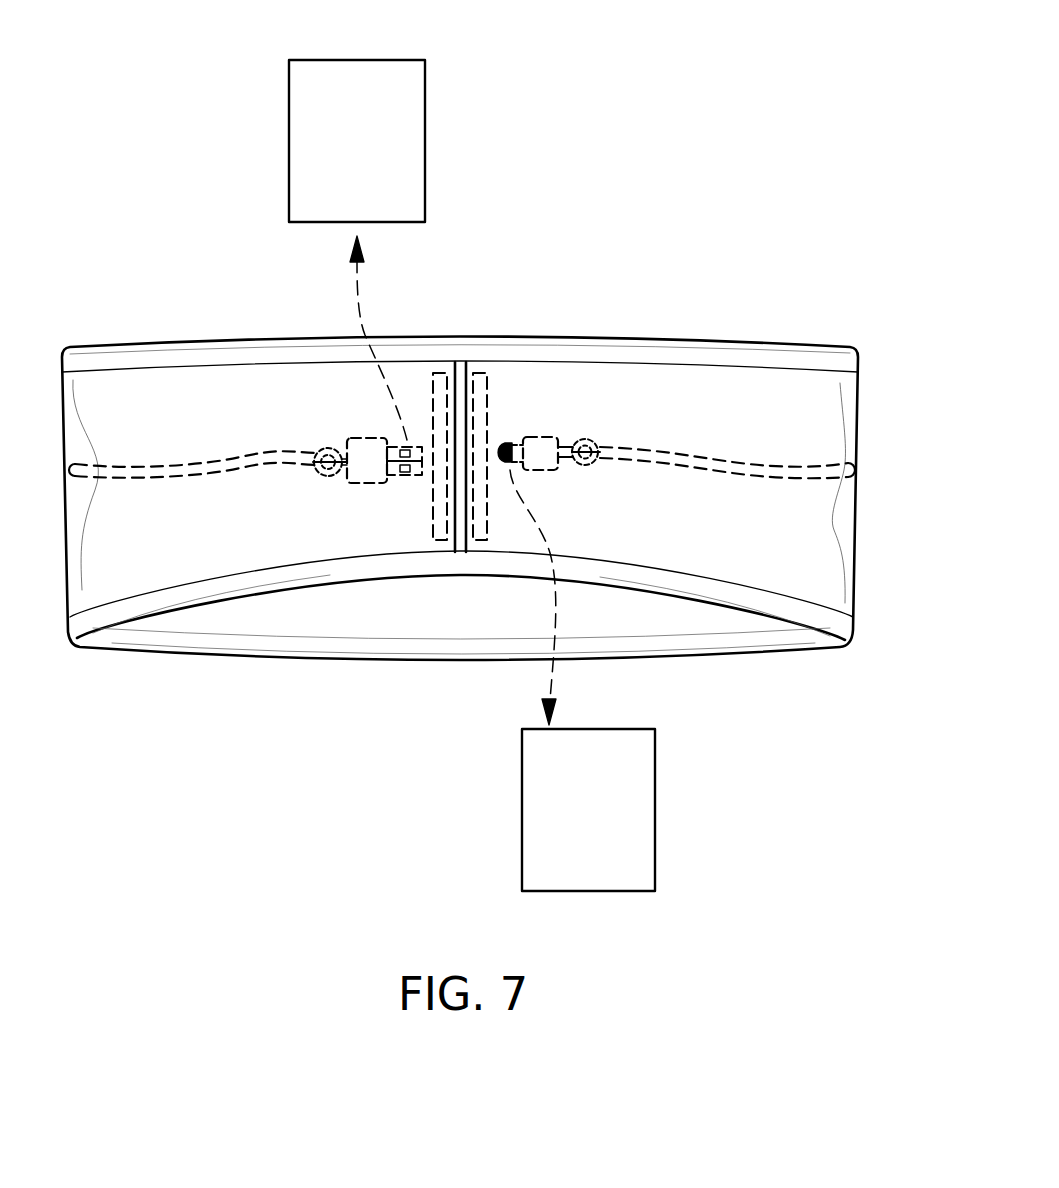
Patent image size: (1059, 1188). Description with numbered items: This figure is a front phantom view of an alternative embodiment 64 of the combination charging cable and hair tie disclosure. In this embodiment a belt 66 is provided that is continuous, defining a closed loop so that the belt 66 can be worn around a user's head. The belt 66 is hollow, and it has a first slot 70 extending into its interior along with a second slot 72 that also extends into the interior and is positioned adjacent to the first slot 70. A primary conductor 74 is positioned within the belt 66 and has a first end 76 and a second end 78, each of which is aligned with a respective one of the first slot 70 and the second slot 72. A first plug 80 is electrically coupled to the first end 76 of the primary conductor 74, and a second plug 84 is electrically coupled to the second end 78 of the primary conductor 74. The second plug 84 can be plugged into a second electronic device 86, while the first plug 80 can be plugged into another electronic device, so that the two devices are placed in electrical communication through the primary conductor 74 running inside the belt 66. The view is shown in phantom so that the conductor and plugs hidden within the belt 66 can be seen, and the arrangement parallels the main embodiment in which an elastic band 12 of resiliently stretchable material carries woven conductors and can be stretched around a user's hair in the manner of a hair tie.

The elastic band 12 is at (289, 140).
The alternative embodiment 64 is at (645, 197).
The belt 66 is at (467, 660).
The first slot 70 is at (433, 410).
The second slot 72 is at (487, 392).
The primary conductor 74 is at (178, 462).
The first end 76 is at (347, 458).
The second end 78 is at (576, 438).
The first plug 80 is at (363, 483).
The second plug 84 is at (537, 437).
The second electronic device 86 is at (657, 837).